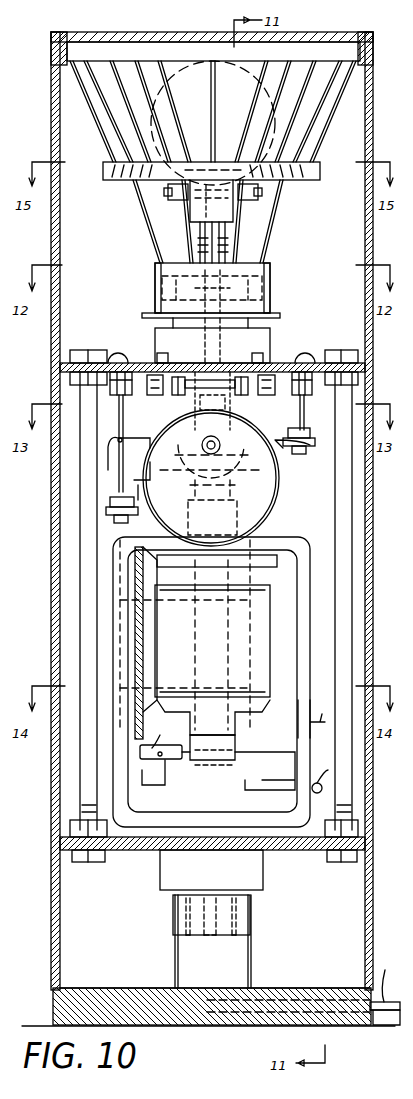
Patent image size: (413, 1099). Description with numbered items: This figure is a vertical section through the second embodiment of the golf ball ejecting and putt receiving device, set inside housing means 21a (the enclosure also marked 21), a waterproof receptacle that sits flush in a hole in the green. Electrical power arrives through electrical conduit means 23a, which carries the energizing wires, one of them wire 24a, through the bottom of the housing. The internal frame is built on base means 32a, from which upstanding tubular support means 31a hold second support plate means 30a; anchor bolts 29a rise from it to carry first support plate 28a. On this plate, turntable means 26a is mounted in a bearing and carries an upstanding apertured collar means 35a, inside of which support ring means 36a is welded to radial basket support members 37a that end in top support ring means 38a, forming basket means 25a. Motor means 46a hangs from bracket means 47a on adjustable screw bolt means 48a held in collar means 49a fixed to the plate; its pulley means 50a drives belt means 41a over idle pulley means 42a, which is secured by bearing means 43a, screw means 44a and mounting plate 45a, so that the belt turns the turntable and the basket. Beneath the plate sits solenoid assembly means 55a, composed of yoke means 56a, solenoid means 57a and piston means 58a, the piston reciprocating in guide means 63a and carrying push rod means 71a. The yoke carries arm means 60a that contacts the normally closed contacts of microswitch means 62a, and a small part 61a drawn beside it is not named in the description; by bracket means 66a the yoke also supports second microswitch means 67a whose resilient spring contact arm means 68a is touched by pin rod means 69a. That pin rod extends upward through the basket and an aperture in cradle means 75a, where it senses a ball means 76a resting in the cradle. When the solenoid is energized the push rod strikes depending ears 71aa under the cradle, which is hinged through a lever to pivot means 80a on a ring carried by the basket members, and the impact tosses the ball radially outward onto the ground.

The housing 21 is at (230, 511).
The housing means 21a is at (372, 92).
The electrical conduit means 23a is at (388, 977).
The wire 24a is at (397, 977).
The basket means 25a is at (328, 144).
The turntable means 26a is at (277, 315).
The first support plate 28a is at (125, 363).
The anchor bolts 29a is at (82, 498).
The second support plate means 30a is at (294, 852).
The upstanding tubular support means 31a is at (65, 894).
The base means 32a is at (122, 988).
The apertured collar means 35a is at (153, 289).
The support ring means 36a is at (160, 272).
The radial basket support members 37a is at (228, 100).
The top support ring means 38a is at (145, 50).
The belt means 41a is at (195, 401).
The idle pulley means 42a is at (252, 398).
The bearing means 43a is at (132, 388).
The screw means 44a is at (148, 346).
The mounting plate 45a is at (185, 360).
The motor means 46a is at (275, 495).
The bracket means 47a is at (136, 483).
The adjustable screw bolt means 48a is at (118, 413).
The collar means 49a is at (315, 362).
The pulley means 50a is at (212, 507).
The solenoid assembly means 55a is at (290, 594).
The yoke means 56a is at (277, 562).
The solenoid means 57a is at (262, 627).
The piston means 58a is at (240, 775).
The arm means 60a is at (324, 770).
The arm 61a is at (318, 711).
The microswitch means 62a is at (165, 760).
The guide means 63a is at (240, 735).
The bracket means 66a is at (108, 500).
The second microswitch means 67a is at (106, 444).
The resilient spring contact arm means 68a is at (282, 452).
The pin rod means 69a is at (208, 160).
The push rod means 71a is at (262, 292).
The depending ears 71aa is at (215, 243).
The cradle means 75a is at (230, 152).
The ball means 76a is at (280, 100).
The pivot means 80a is at (168, 198).